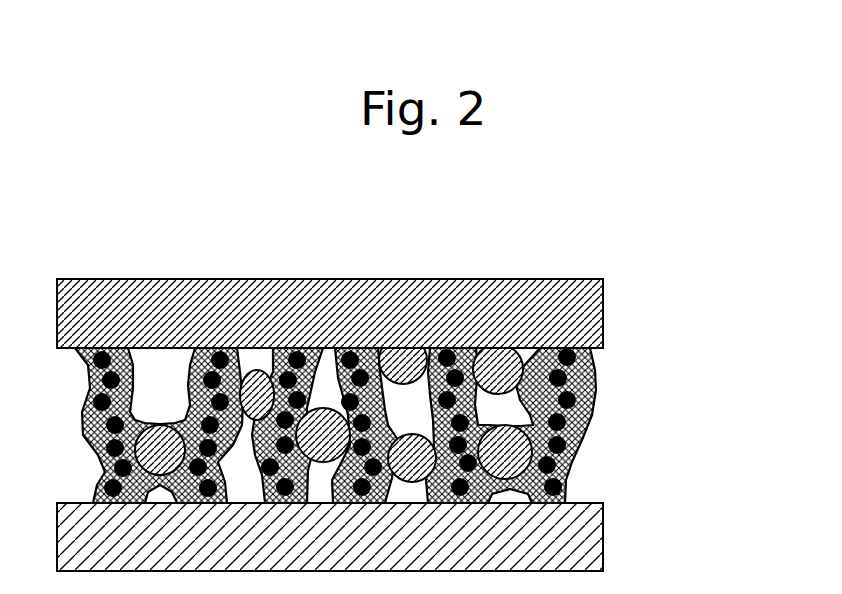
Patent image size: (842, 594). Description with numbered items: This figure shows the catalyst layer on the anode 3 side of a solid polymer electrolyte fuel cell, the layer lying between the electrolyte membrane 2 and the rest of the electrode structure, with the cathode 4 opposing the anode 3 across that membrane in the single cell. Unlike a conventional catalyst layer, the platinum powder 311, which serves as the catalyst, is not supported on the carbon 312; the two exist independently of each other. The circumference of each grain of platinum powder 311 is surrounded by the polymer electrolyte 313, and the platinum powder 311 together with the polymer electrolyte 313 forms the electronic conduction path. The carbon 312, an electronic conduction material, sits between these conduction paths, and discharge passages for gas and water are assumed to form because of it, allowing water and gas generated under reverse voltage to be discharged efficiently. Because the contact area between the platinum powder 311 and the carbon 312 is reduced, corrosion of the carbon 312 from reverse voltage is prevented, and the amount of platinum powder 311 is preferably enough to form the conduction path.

The electrolyte membrane 2 is at (603, 532).
The cathode 4 is at (603, 315).
The anode 3 is at (427, 419).
The platinum powder 311 is at (597, 382).
The carbon 312 is at (560, 430).
The polymer electrolyte 313 is at (730, 366).